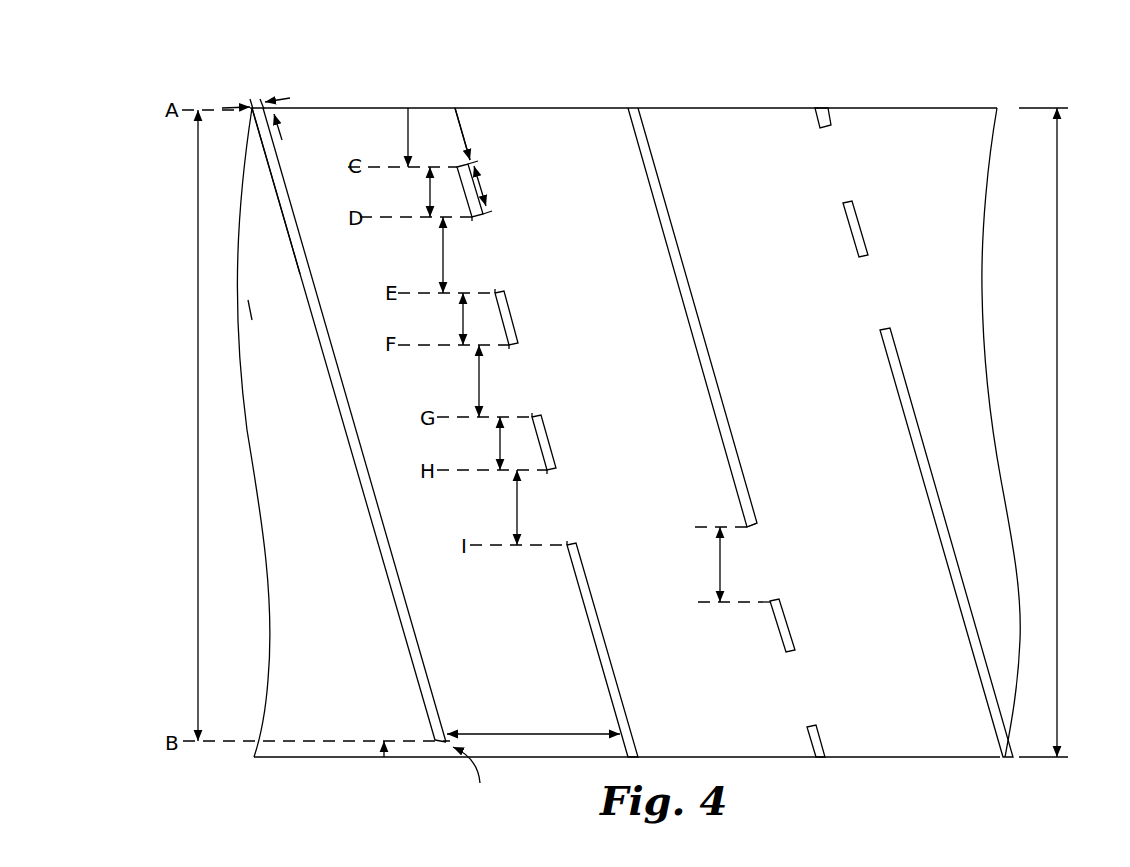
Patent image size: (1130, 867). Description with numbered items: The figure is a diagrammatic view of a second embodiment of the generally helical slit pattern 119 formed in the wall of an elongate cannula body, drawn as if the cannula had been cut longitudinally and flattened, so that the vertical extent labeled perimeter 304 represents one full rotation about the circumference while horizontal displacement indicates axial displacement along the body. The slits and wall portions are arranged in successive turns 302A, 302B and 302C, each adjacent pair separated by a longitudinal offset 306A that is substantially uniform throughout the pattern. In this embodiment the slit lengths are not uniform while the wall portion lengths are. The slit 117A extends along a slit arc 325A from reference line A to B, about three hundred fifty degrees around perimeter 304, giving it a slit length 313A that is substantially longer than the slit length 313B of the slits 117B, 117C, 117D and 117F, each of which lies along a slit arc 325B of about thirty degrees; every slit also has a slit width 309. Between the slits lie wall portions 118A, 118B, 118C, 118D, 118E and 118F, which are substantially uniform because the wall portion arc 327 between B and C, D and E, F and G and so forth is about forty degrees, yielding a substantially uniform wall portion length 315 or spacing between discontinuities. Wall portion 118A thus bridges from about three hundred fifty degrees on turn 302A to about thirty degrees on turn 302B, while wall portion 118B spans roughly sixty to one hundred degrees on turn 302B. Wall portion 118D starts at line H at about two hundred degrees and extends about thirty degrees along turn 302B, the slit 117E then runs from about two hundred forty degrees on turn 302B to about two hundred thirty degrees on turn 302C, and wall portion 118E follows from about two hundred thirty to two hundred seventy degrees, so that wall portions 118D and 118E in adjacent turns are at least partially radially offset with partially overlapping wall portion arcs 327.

The generally helical slit pattern 119 is at (741, 92).
The turn 302A is at (252, 88).
The turn 302B is at (445, 100).
The turn 302C is at (630, 105).
The slit width 309 is at (238, 106).
The slit length 313A is at (413, 603).
The slit length 313B is at (488, 194).
The wall portion length 315 is at (466, 140).
The slit 117A is at (327, 343).
The slit 117B is at (466, 192).
The slit 117C is at (510, 320).
The slit 117D is at (545, 443).
The slit 117E is at (603, 645).
The slit 117F is at (786, 628).
The wall portion 118A is at (447, 137).
The wall portion 118B is at (490, 271).
The wall portion 118C is at (528, 385).
The wall portion 118D is at (560, 505).
The wall portion 118E is at (768, 563).
The wall portion 118F is at (810, 700).
The slit arc 325A is at (198, 183).
The slit arc 325B is at (430, 190).
The wall portion arc 327 is at (408, 128).
The longitudinal offset 306A is at (527, 734).
The perimeter 304 is at (1057, 385).